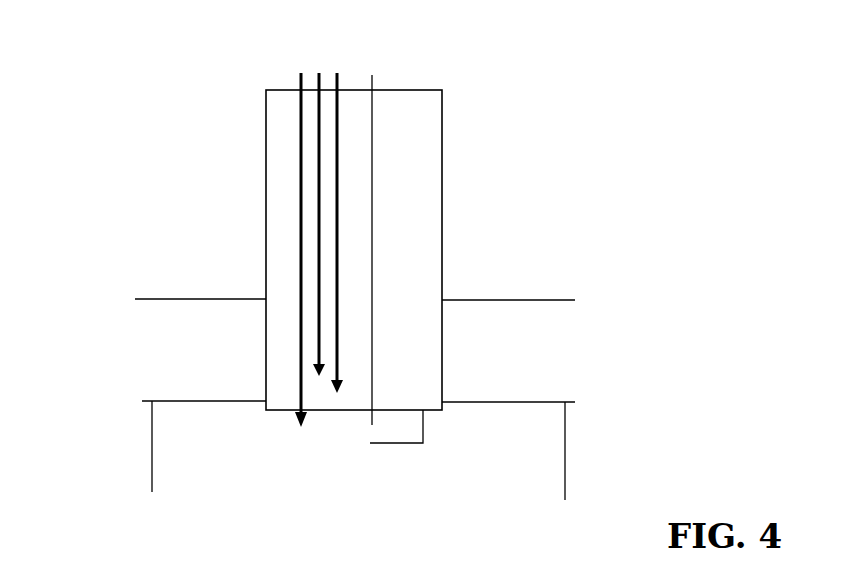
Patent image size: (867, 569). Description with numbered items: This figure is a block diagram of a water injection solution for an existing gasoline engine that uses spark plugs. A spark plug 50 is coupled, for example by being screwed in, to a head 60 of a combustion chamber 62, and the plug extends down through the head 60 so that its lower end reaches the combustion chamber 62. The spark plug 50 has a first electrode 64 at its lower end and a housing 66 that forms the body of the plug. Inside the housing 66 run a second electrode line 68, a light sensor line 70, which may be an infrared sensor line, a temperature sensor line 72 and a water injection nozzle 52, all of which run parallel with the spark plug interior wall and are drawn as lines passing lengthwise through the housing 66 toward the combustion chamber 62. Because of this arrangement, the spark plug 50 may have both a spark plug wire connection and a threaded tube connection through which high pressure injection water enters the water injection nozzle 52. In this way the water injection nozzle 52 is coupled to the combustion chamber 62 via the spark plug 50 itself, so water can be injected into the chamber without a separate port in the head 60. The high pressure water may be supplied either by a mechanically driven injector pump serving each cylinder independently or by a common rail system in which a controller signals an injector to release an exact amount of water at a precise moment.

The spark plug 50 is at (148, 196).
The water injection nozzle 52 is at (303, 284).
The head 60 is at (207, 358).
The combustion chamber 62 is at (235, 493).
The first electrode 64 is at (407, 445).
The housing 66 is at (442, 290).
The second electrode line 68 is at (372, 195).
The light sensor line 70 is at (343, 80).
The temperature sensor line 72 is at (316, 80).